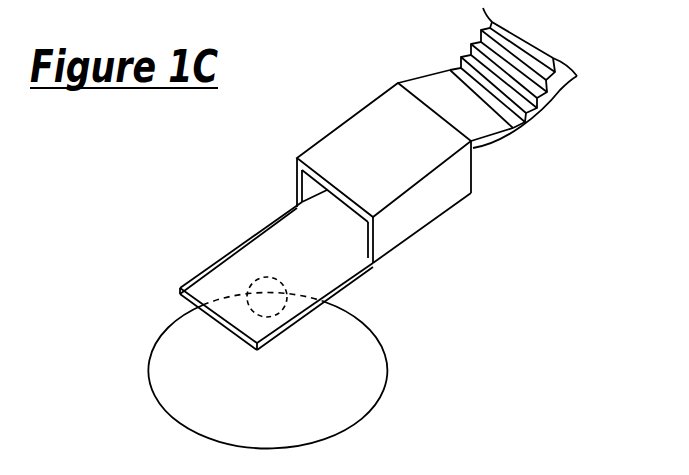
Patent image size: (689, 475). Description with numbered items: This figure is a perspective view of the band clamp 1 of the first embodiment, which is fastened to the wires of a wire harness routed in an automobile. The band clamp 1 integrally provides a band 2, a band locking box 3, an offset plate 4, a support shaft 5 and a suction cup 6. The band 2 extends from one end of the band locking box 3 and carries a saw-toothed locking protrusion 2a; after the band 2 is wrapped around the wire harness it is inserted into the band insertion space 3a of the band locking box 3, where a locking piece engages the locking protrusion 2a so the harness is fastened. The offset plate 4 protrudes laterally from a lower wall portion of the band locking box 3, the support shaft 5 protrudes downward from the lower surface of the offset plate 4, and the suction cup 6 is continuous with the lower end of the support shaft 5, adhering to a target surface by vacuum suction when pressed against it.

The band clamp 1 is at (334, 44).
The band 2 is at (441, 88).
The saw-toothed locking protrusion 2a is at (503, 81).
The band locking box 3 is at (333, 127).
The band insertion space 3a is at (333, 205).
The offset plate 4 is at (327, 265).
The support shaft 5 is at (253, 283).
The suction cup 6 is at (363, 377).